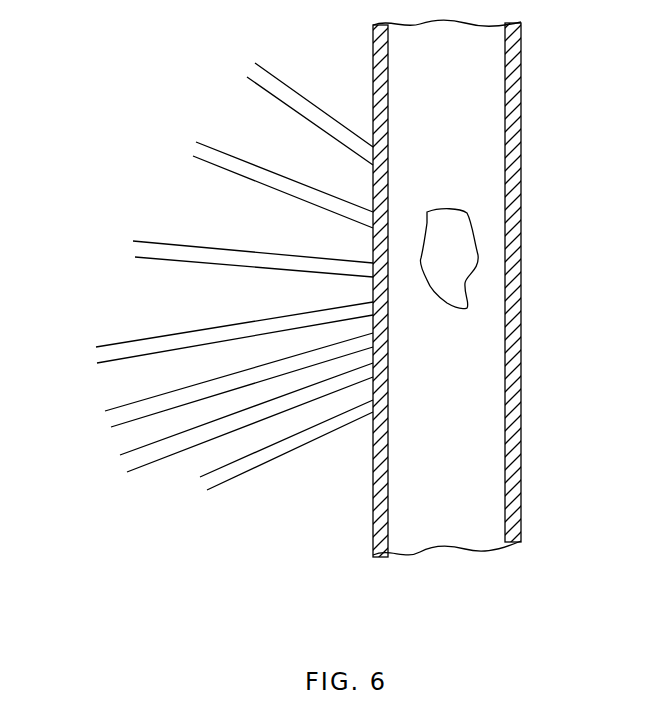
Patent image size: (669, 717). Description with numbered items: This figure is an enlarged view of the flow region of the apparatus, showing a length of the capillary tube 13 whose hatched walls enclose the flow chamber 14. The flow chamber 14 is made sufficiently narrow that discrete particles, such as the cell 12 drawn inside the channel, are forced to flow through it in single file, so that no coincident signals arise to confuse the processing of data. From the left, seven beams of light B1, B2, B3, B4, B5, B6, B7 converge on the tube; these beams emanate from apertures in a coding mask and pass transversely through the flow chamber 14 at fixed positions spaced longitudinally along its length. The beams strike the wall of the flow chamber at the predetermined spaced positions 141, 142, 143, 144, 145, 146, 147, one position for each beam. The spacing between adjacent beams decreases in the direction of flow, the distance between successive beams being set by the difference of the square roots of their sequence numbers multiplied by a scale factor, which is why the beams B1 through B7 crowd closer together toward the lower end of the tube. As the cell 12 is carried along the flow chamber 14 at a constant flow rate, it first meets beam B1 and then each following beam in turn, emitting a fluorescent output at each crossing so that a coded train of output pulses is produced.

The cell 12 is at (449, 259).
The capillary tube 13 is at (521, 121).
The flow chamber 14 is at (436, 502).
The light beam B1 is at (280, 80).
The light beam B2 is at (230, 151).
The light beam B3 is at (171, 247).
The light beam B4 is at (126, 344).
The light beam B5 is at (138, 404).
The light beam B6 is at (153, 451).
The light beam B7 is at (221, 476).
The spaced position 141 is at (390, 143).
The spaced position 142 is at (388, 218).
The spaced position 143 is at (388, 262).
The spaced position 144 is at (388, 307).
The spaced position 145 is at (388, 343).
The spaced position 146 is at (388, 375).
The spaced position 147 is at (388, 407).